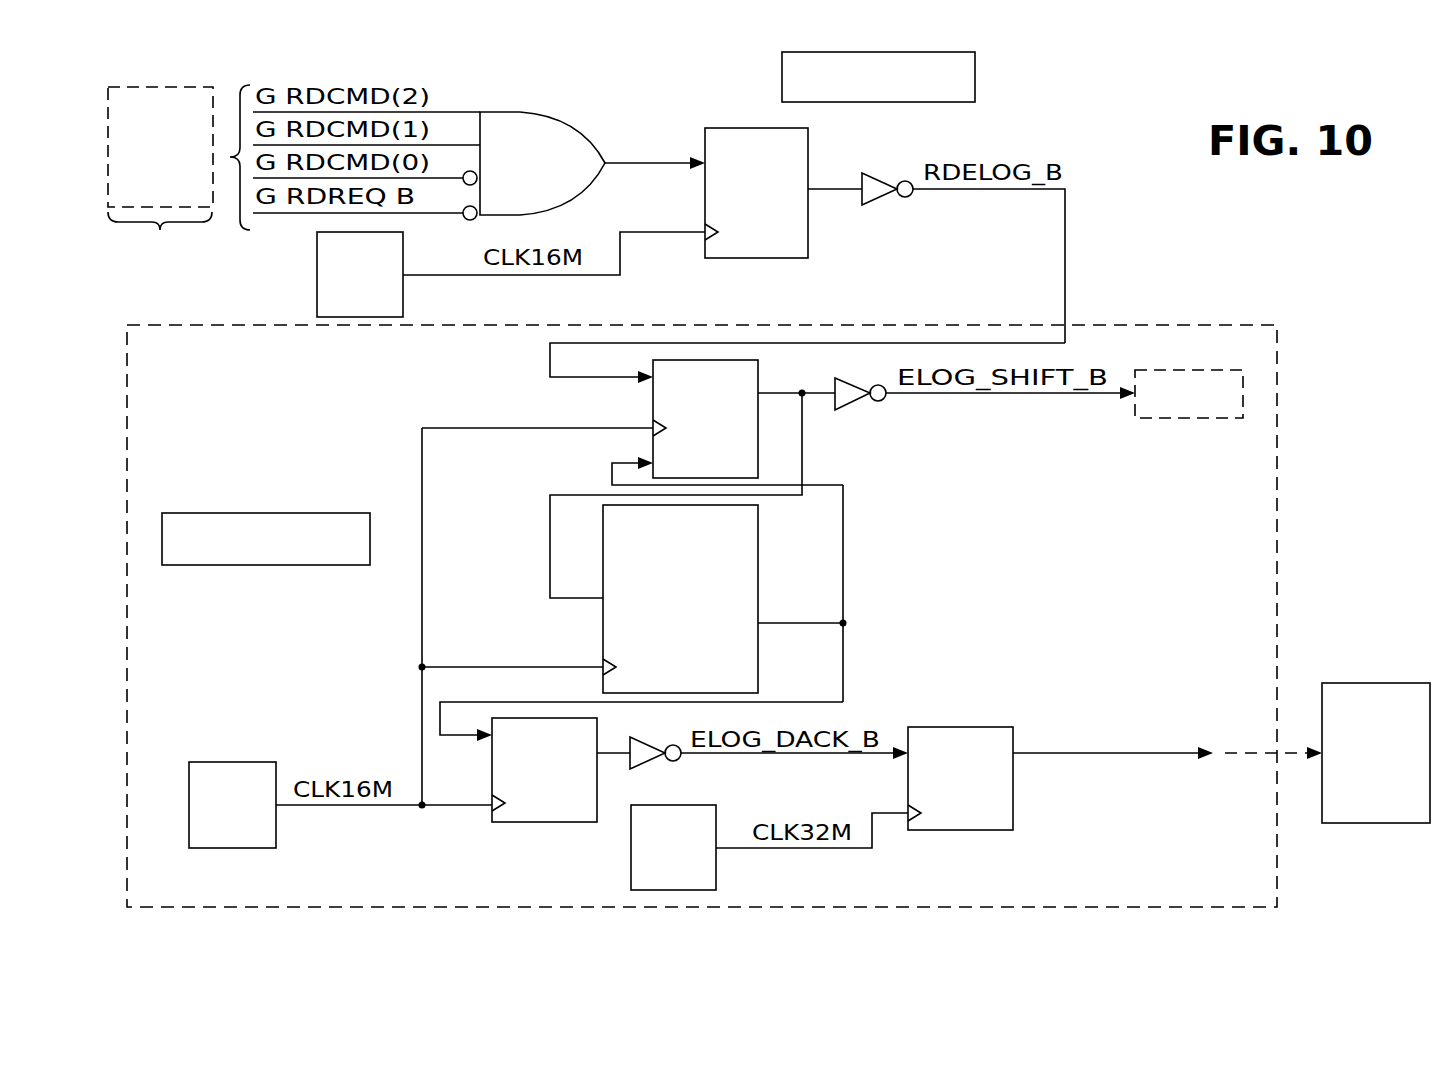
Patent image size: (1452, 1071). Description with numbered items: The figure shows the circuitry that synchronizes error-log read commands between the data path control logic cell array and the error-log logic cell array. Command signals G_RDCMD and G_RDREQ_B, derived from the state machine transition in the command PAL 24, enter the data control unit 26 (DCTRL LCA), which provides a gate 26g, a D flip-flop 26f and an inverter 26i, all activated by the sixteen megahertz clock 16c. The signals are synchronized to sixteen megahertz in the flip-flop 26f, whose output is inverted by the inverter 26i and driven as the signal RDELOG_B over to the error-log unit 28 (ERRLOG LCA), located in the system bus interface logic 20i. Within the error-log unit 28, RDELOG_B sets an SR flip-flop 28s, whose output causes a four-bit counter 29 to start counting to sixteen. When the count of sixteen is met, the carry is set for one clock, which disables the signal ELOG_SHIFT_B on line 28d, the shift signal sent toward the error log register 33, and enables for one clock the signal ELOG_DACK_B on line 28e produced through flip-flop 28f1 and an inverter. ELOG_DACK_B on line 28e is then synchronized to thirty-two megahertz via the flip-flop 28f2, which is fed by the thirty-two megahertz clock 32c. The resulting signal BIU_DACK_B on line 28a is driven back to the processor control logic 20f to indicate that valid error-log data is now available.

The command PAL 24 is at (178, 192).
The data path control logic LCA 26 is at (640, 112).
The gate 26g is at (548, 120).
The D flip-flop 26f is at (808, 232).
The inverter 26i is at (885, 200).
The 16 megahertz clock 16c is at (390, 306).
The system bus interface logic 20i is at (1155, 325).
The error-log LCA 28 is at (300, 443).
The SR flip-flop 28s is at (758, 438).
The ELOG_SHIFT_B line 28d is at (855, 400).
The error log register 33 is at (1205, 418).
The four-bit counter 29 is at (758, 545).
The flip-flop 28f1 is at (552, 822).
The ELOG_DACK_B line 28e is at (742, 758).
The 32 megahertz clock 32c is at (702, 880).
The flip-flop 28f2 is at (965, 727).
The BIU_DACK_B line 28a is at (1137, 755).
The processor control logic 20f is at (1402, 812).